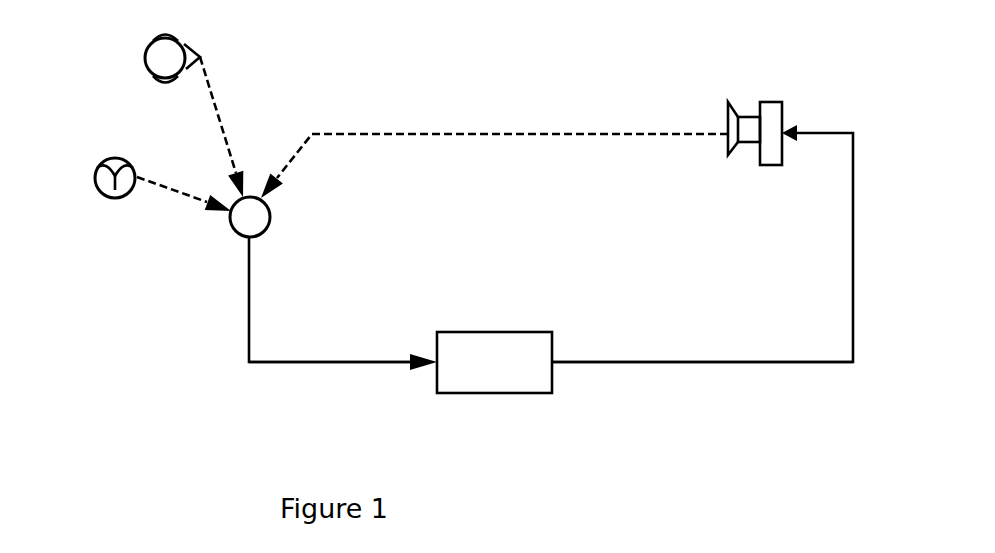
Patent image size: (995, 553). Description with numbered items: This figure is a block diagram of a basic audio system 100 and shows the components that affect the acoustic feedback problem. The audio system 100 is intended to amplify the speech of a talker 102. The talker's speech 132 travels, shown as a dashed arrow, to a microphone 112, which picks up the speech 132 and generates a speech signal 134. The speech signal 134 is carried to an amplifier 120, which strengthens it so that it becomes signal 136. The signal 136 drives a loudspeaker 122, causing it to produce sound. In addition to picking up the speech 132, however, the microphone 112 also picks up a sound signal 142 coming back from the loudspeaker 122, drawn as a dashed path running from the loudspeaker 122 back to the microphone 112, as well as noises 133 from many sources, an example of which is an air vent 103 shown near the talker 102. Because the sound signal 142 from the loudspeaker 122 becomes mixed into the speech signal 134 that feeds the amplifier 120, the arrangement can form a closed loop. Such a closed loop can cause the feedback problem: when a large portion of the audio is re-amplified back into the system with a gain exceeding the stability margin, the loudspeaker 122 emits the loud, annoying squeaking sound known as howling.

The audio system 100 is at (528, 50).
The talker 102 is at (165, 85).
The air vent 103 is at (107, 197).
The microphone 112 is at (240, 237).
The amplifier 120 is at (498, 393).
The loudspeaker 122 is at (770, 167).
The speech 132 is at (227, 135).
The noises 133 is at (187, 202).
The speech signal 134 is at (300, 362).
The signal 136 is at (643, 360).
The sound signal 142 is at (332, 134).